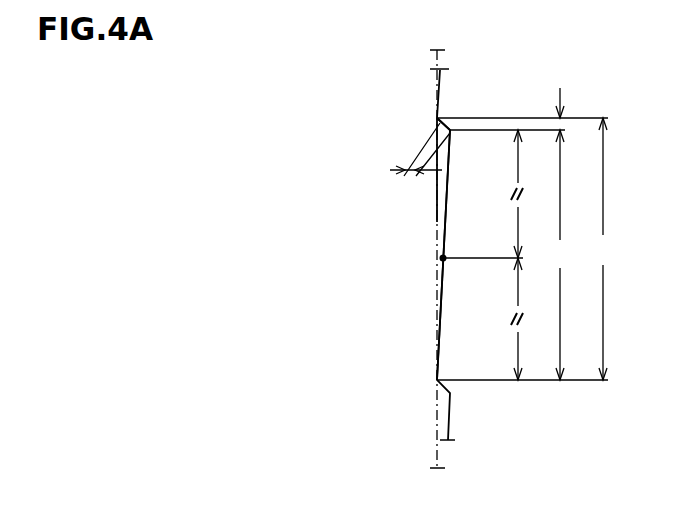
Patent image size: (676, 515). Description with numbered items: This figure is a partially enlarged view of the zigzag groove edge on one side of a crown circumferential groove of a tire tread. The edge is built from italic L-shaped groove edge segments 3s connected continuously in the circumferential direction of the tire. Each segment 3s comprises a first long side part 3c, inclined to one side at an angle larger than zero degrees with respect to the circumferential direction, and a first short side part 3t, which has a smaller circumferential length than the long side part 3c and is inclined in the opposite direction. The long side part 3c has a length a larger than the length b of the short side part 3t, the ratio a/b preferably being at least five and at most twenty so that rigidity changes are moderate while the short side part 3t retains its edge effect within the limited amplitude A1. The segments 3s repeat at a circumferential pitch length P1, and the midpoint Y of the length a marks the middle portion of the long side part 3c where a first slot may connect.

The italic L-shaped groove edge segment 3s is at (317, 120).
The first short side part 3t is at (437, 121).
The first long side part 3c is at (446, 222).
The amplitude A1 is at (418, 161).
The midpoint Y is at (444, 259).
The axial length of long side part a is at (559, 255).
The axial length of short side part b is at (570, 103).
The circumferential pitch length P1 is at (605, 249).